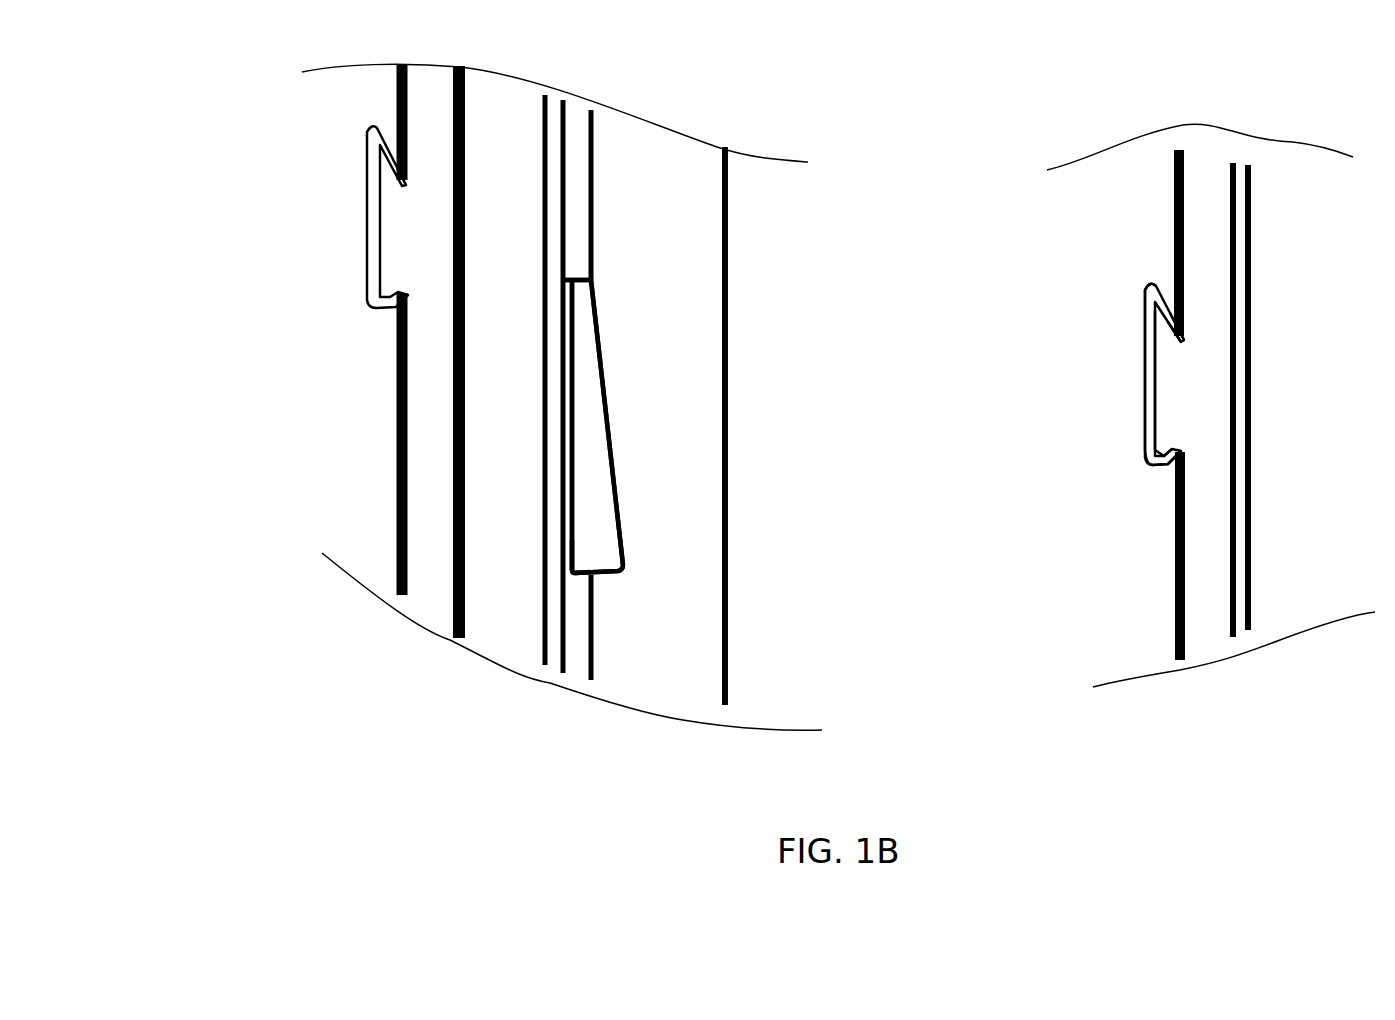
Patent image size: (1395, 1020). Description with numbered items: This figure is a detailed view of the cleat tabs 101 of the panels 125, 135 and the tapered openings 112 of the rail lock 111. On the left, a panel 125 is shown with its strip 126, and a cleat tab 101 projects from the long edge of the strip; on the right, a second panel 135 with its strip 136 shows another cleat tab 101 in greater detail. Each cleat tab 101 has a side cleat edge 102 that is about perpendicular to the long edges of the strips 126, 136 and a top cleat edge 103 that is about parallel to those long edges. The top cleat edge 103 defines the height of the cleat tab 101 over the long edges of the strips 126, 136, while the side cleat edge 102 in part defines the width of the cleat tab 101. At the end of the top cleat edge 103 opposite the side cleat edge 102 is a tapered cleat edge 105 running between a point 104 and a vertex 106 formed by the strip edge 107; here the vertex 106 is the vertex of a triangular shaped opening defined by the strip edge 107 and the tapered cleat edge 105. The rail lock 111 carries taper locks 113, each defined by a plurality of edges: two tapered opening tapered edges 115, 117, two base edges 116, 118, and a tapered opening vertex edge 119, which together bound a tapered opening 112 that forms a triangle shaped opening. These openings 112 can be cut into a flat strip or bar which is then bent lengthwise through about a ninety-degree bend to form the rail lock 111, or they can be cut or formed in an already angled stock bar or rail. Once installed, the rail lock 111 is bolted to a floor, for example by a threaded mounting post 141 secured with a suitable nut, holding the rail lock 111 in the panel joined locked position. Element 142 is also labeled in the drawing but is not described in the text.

The cleat tab 101 is at (322, 235).
The side cleat edge 102 is at (1180, 458).
The top cleat edge 103 is at (1150, 378).
The point 104 is at (1152, 287).
The tapered cleat edge 105 is at (1176, 302).
The vertex 106 is at (1180, 337).
The strip edge 107 is at (1173, 275).
The rail lock 111 is at (652, 146).
The tapered opening 112 is at (590, 413).
The taper lock 113 is at (664, 399).
The tapered opening tapered edge 115 is at (618, 488).
The base edge 116 is at (613, 577).
The tapered opening tapered edge 117 is at (573, 463).
The base edge 118 is at (562, 553).
The tapered opening vertex edge 119 is at (563, 281).
The panel 125 is at (360, 540).
The strip 126 is at (427, 570).
The panel 135 is at (1317, 565).
The strip 136 is at (1202, 615).
The threaded mounting post 141 is at (552, 183).
The panel edge 142 is at (668, 193).